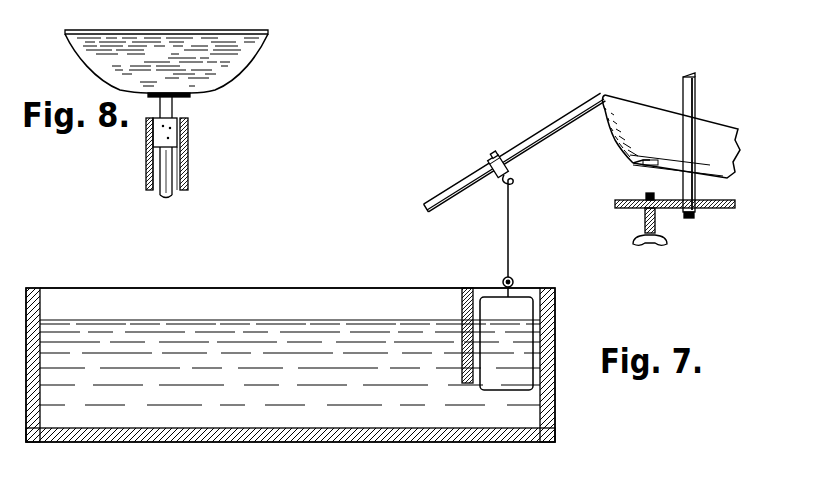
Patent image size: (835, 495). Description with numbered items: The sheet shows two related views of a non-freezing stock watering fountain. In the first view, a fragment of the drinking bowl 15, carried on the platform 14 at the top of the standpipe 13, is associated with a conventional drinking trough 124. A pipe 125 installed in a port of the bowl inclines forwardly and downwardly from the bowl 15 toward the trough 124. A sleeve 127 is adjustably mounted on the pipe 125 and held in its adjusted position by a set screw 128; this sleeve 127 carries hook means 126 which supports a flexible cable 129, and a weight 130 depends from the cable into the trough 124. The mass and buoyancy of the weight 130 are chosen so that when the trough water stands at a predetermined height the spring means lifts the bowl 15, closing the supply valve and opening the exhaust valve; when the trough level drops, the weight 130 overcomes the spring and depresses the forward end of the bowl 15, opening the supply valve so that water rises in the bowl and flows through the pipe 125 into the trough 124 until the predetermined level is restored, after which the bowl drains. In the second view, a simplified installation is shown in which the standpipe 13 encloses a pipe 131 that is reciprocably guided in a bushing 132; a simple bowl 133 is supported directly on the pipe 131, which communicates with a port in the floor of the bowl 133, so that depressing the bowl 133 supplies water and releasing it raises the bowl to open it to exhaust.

In FIG. 8, the standpipe 13 is at (188, 160).
In FIG. 7, the platform 14 is at (712, 208).
In FIG. 7, the drinking bowl 15 is at (717, 110).
In FIG. 7, the drinking trough 124 is at (218, 436).
In FIG. 7, the pipe 125 is at (548, 138).
In FIG. 7, the hook means 126 is at (502, 188).
In FIG. 7, the sleeve 127 is at (490, 163).
In FIG. 7, the set screw 128 is at (493, 152).
In FIG. 7, the flexible cable 129 is at (509, 230).
In FIG. 7, the weight 130 is at (520, 303).
In FIG. 8, the pipe 131 is at (160, 193).
In FIG. 8, the bushing 132 is at (153, 137).
In FIG. 8, the bowl 133 is at (94, 66).